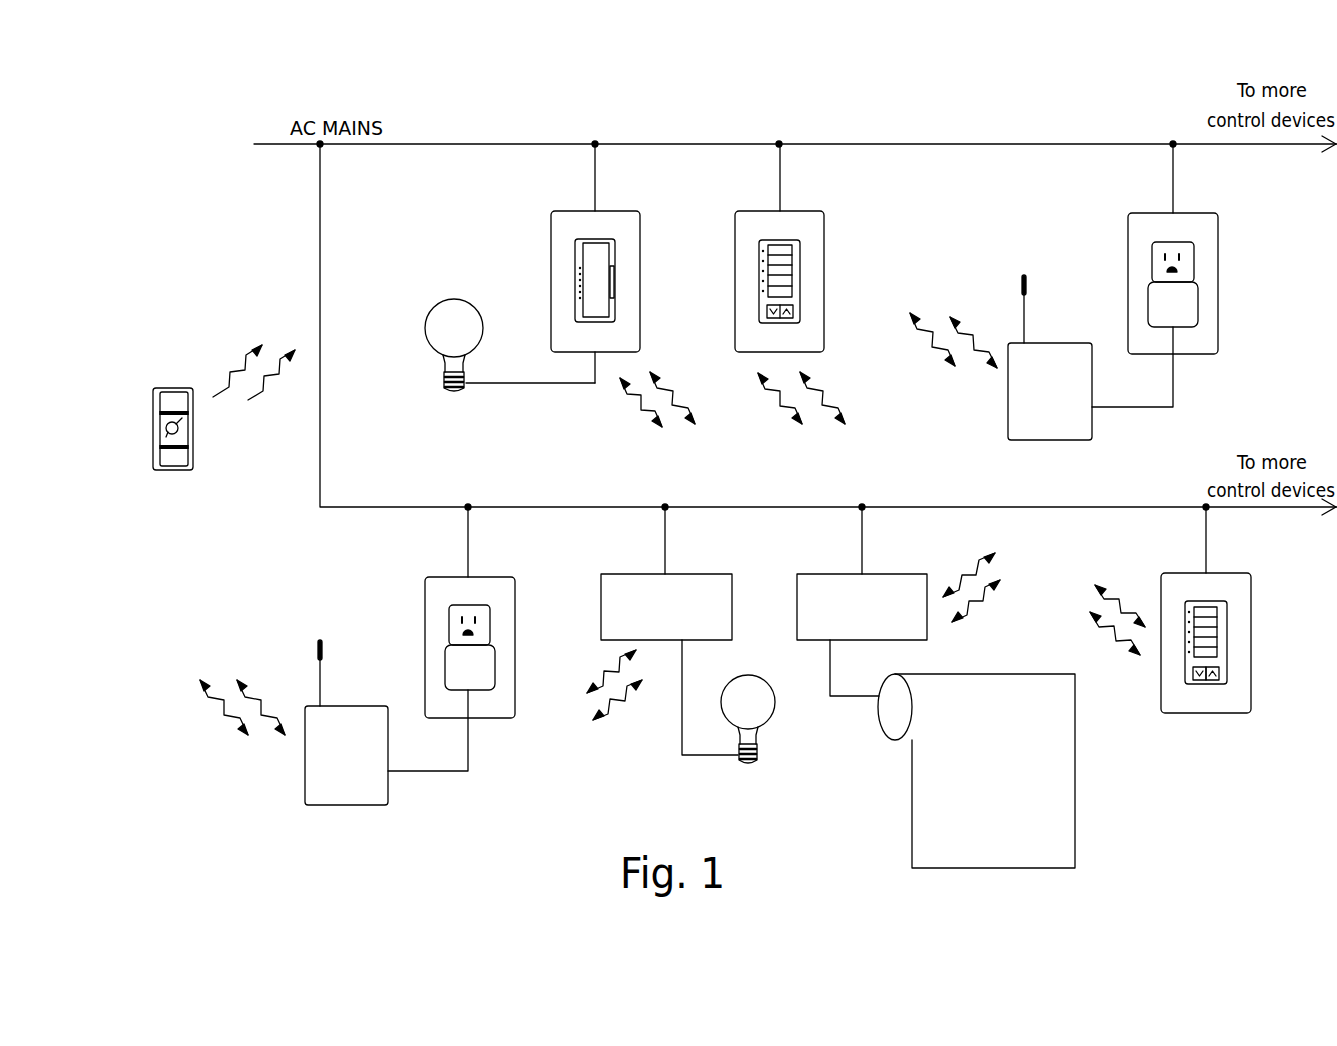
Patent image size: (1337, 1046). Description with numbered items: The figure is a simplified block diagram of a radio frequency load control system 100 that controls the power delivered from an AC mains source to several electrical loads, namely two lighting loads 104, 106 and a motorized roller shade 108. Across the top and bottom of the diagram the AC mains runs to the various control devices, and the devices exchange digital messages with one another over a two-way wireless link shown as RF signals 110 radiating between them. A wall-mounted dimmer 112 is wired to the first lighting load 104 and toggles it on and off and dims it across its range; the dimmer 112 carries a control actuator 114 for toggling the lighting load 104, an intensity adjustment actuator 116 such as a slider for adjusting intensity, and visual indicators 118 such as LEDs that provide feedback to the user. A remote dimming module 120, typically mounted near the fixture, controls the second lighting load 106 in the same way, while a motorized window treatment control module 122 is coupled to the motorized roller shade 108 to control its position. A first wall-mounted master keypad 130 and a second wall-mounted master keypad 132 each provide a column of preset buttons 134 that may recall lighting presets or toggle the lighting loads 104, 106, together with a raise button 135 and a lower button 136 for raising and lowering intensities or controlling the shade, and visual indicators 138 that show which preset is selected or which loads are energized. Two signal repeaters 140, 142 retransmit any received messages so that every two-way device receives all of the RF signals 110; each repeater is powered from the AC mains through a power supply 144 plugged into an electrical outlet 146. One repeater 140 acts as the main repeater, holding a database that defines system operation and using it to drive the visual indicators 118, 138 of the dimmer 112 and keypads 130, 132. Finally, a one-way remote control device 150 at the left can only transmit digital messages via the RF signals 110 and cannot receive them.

The RF load control system 100 is at (763, 110).
The lighting load 104 is at (434, 312).
The lighting load 106 is at (776, 702).
The motorized roller shade 108 is at (975, 734).
The wireless RF signals 110 is at (702, 447).
The wall-mounted dimmer 112 is at (590, 263).
The control actuator 114 is at (597, 255).
The intensity adjustment actuator 116 is at (614, 278).
The visual indicators 118 is at (568, 272).
The remote dimming module 120 is at (650, 619).
The motorized window treatment control module 122 is at (847, 619).
The first wall-mounted master keypad 130 is at (1206, 646).
The second wall-mounted master keypad 132 is at (815, 211).
The preset buttons 134 is at (1215, 611).
The raise button 135 is at (1213, 683).
The lower button 136 is at (1200, 683).
The visual indicators 138 is at (1181, 629).
The signal repeater 140 is at (355, 780).
The signal repeater 142 is at (1058, 425).
The power supply 144 is at (1190, 307).
The electrical outlet 146 is at (1135, 232).
The one-way RF remote control device 150 is at (173, 398).